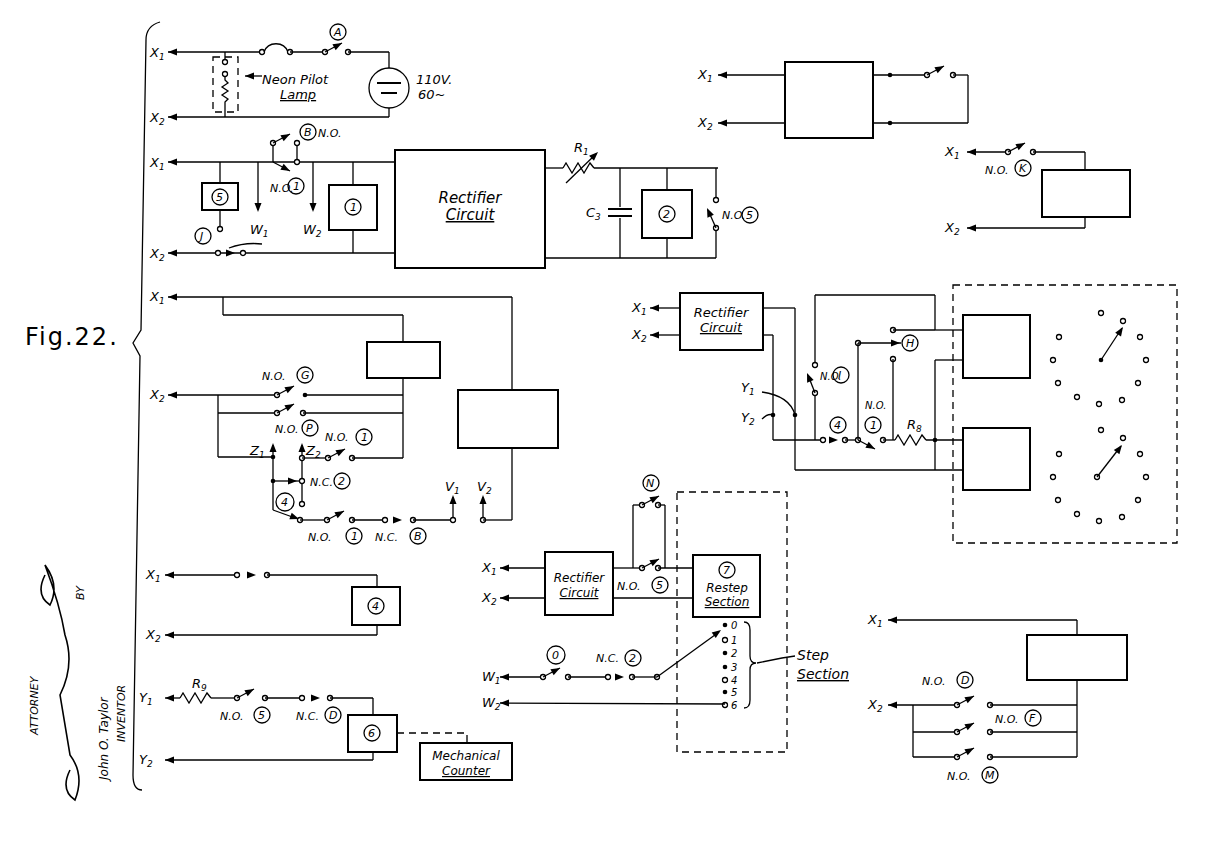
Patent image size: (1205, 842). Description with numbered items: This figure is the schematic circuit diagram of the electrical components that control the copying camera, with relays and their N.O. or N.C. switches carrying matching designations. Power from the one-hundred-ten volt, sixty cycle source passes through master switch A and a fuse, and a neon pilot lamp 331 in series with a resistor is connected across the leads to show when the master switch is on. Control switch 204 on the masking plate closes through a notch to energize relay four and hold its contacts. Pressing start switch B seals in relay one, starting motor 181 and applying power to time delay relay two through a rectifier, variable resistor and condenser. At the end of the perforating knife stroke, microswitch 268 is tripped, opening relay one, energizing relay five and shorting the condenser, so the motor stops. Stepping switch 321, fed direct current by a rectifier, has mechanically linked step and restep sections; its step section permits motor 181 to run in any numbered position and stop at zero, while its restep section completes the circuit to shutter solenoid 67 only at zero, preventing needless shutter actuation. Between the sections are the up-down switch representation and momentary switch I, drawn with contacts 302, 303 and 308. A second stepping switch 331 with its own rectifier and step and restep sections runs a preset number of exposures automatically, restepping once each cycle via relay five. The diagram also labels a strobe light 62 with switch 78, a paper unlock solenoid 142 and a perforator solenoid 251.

The neon pilot lamp 331 is at (212, 81).
The microswitch 268 is at (255, 253).
The strobe light 62 is at (826, 62).
The strobe light switch 78 is at (937, 80).
The paper unlock solenoid 142 is at (1130, 190).
The motor 181 is at (430, 342).
The shutter solenoid 67 is at (537, 390).
The contact 302 is at (912, 319).
The contact 308 is at (873, 340).
The contact 303 is at (896, 358).
The stepping switch 321 is at (1093, 292).
The control switch 204 is at (243, 580).
The perforator solenoid 251 is at (1107, 634).